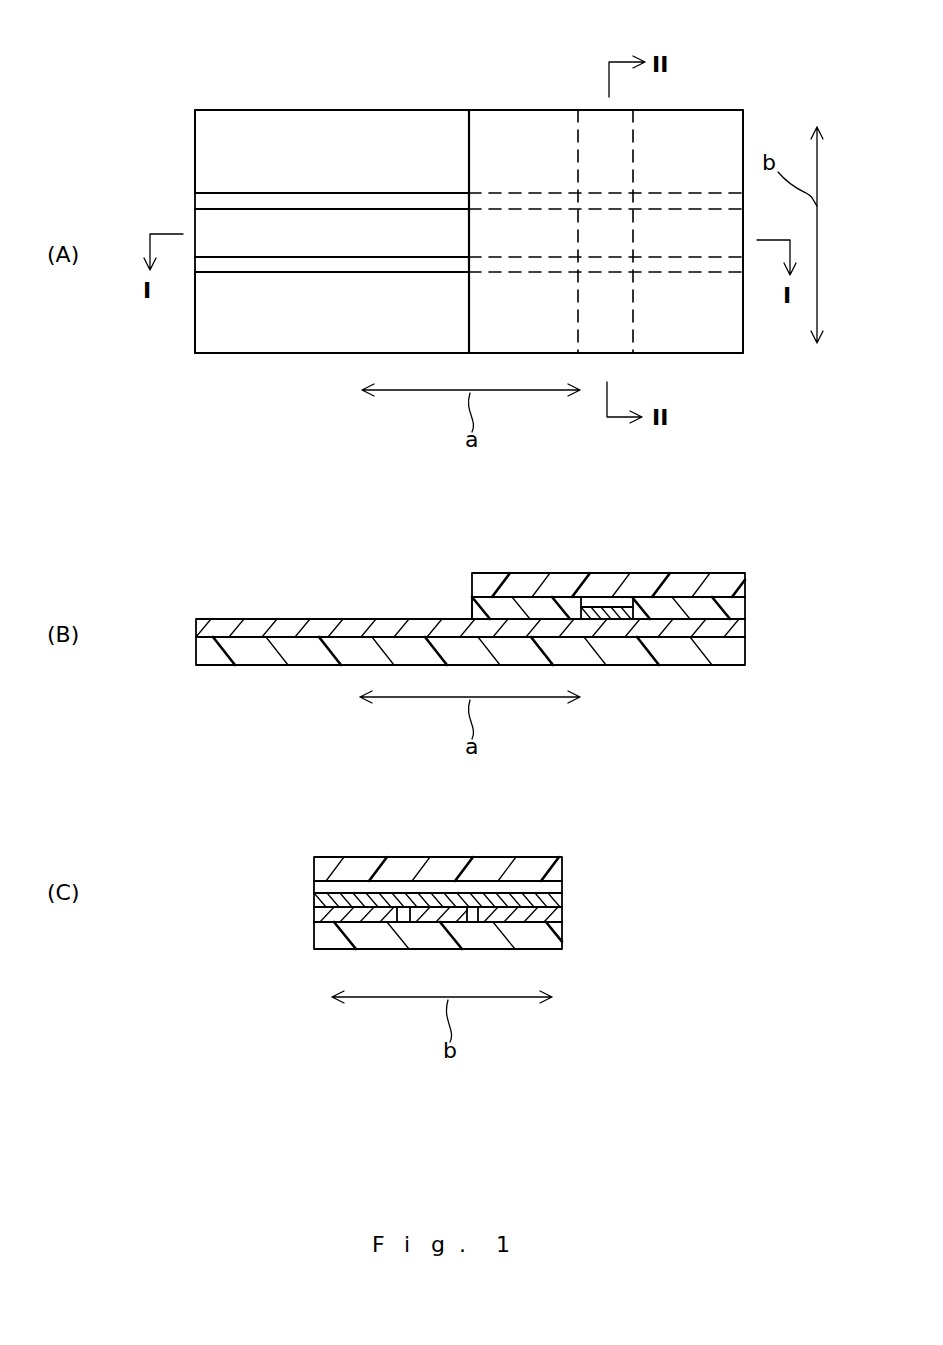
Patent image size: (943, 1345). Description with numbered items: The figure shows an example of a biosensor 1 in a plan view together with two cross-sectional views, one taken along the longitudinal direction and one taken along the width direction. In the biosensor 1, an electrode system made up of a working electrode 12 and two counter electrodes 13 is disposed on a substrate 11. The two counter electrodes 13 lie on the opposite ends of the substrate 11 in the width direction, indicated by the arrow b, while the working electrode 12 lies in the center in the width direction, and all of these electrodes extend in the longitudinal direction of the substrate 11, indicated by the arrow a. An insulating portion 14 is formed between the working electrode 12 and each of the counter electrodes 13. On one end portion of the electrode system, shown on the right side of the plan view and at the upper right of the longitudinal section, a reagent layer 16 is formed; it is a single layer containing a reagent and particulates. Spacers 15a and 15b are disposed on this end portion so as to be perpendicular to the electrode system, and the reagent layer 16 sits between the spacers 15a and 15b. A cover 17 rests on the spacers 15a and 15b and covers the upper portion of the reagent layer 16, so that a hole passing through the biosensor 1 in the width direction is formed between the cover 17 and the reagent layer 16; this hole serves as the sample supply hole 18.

The biosensor 1 is at (703, 70).
The substrate 11 is at (745, 653).
The working electrode 12 is at (196, 229).
The counter electrodes 13 is at (202, 121).
The insulating portion 14 is at (200, 203).
The spacer 15a is at (745, 612).
The spacer 15b is at (484, 609).
The reagent layer 16 is at (605, 613).
The cover 17 is at (688, 128).
The sample supply hole 18 is at (612, 602).